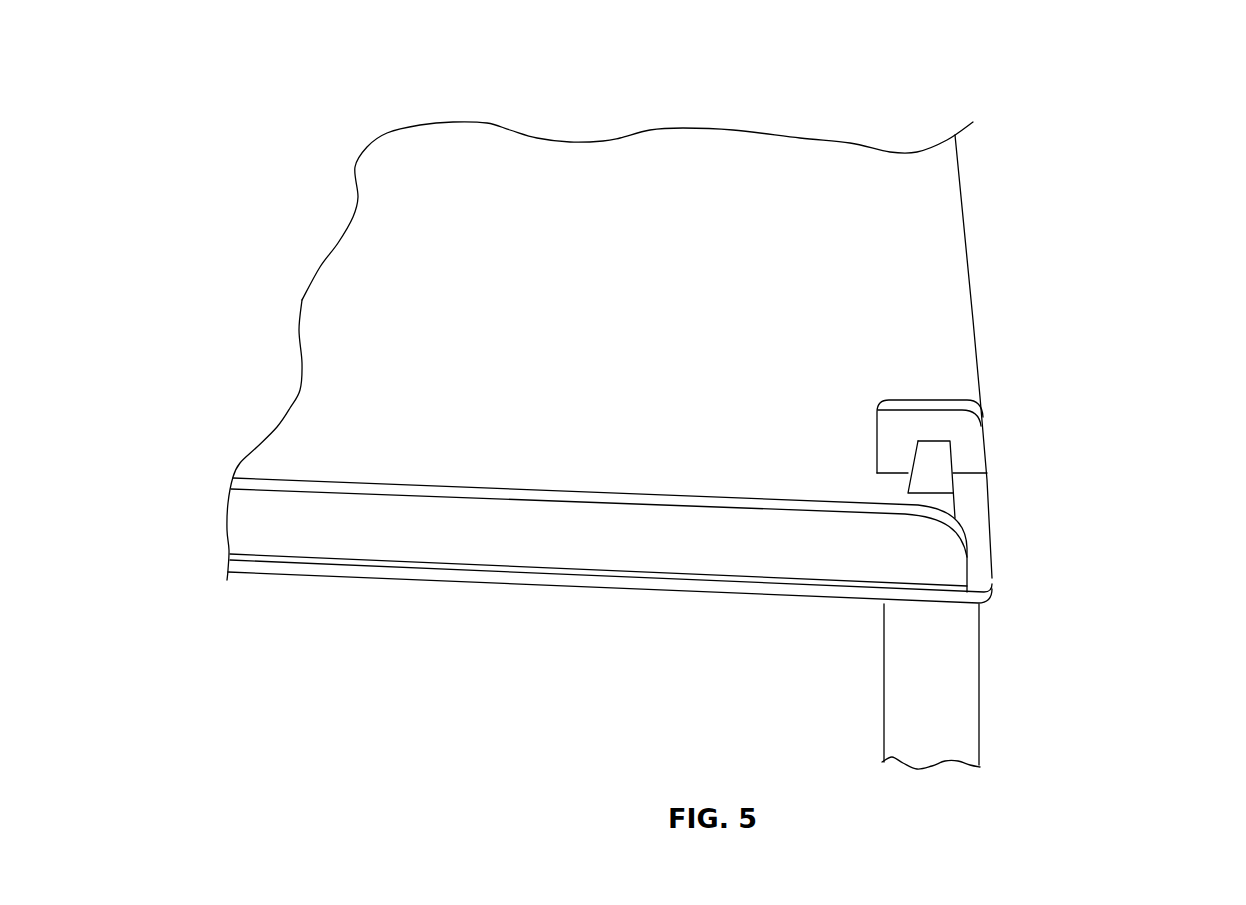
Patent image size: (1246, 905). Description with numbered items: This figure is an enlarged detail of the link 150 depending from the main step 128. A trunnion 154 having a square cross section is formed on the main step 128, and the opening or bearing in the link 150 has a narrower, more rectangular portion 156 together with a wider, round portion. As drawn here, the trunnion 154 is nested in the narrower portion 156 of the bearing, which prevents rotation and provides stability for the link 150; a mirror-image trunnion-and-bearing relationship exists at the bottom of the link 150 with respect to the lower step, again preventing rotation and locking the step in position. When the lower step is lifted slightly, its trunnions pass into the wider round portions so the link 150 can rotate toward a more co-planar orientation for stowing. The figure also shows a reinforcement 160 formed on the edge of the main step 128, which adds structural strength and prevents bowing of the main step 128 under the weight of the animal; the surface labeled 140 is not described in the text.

The main step 128 is at (810, 147).
The side wall 140 is at (315, 430).
The link 150 is at (947, 706).
The trunnion 154 is at (955, 480).
The narrower portion 156 is at (953, 455).
The reinforcement 160 is at (260, 519).